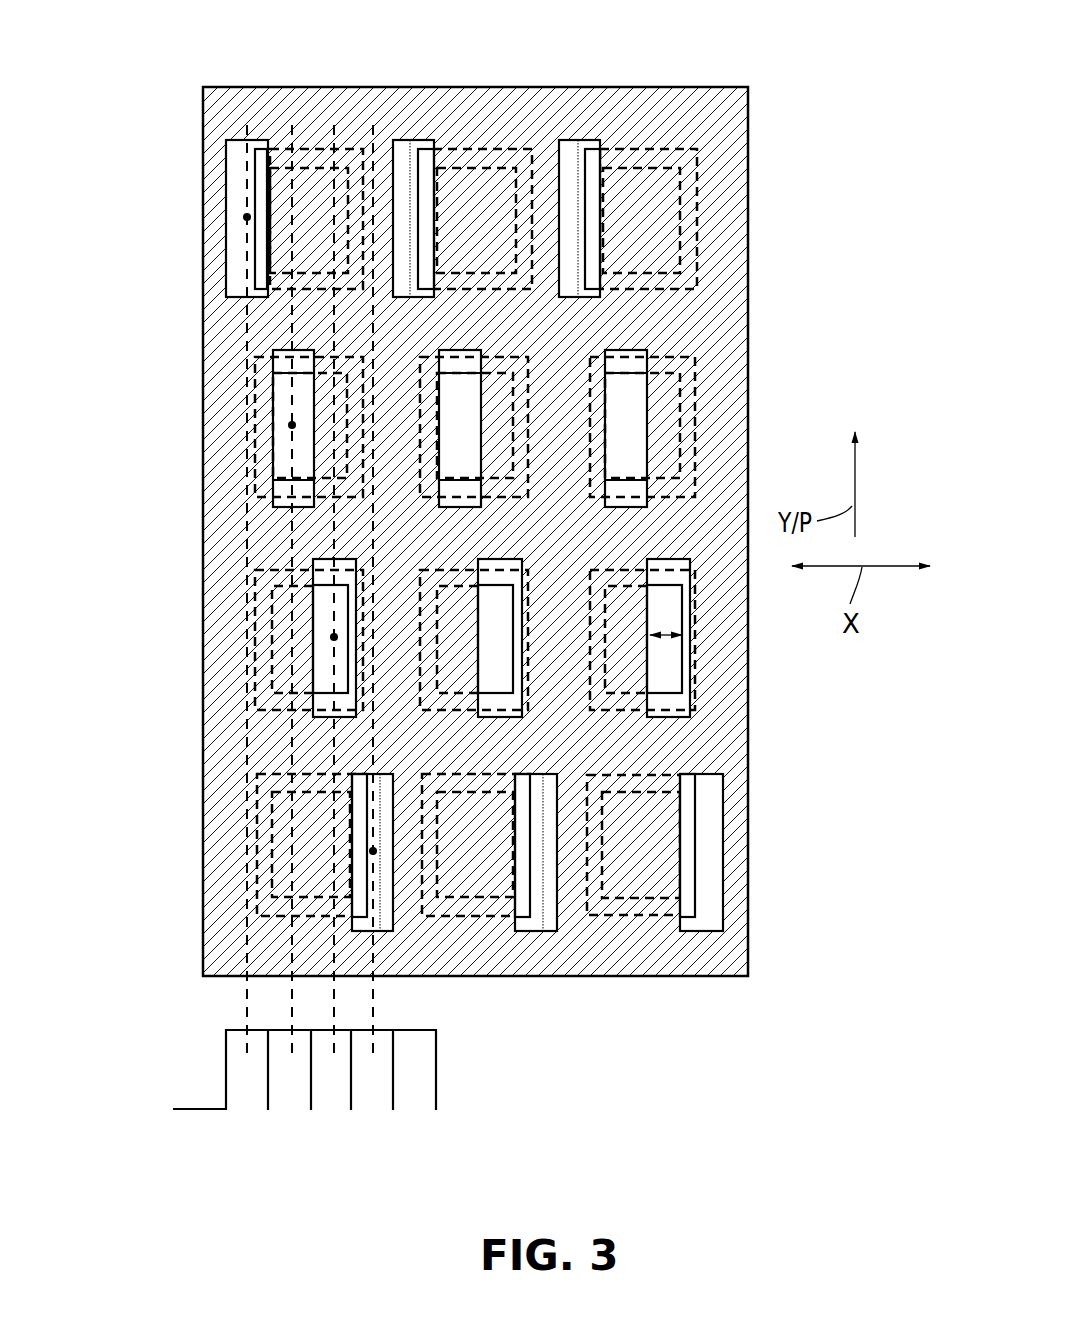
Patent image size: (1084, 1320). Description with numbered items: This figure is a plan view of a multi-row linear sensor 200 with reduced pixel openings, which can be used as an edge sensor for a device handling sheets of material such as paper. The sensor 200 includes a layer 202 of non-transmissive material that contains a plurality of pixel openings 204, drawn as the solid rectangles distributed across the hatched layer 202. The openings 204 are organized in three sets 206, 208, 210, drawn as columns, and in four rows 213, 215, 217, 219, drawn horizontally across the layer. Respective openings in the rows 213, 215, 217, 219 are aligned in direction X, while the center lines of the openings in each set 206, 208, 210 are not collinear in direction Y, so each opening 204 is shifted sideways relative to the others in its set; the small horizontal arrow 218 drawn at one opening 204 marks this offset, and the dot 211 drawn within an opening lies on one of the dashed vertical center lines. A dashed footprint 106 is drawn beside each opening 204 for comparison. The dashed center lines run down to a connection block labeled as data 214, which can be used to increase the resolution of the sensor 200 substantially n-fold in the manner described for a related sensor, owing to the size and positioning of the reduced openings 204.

The light emitting element footprint 106 is at (272, 115).
The multi-row linear sensor 200 is at (542, 491).
The layer of non-transmissive material 202 is at (728, 290).
The pixel opening 204 is at (677, 558).
The set of openings 206 is at (310, 458).
The set of openings 208 is at (494, 80).
The set of openings 210 is at (657, 82).
The pivot point 211 is at (334, 556).
The row of openings 213 is at (180, 210).
The data 214 is at (436, 1166).
The row of openings 215 is at (180, 414).
The row of openings 217 is at (439, 579).
The offset distance 218 is at (668, 632).
The row of openings 219 is at (180, 854).